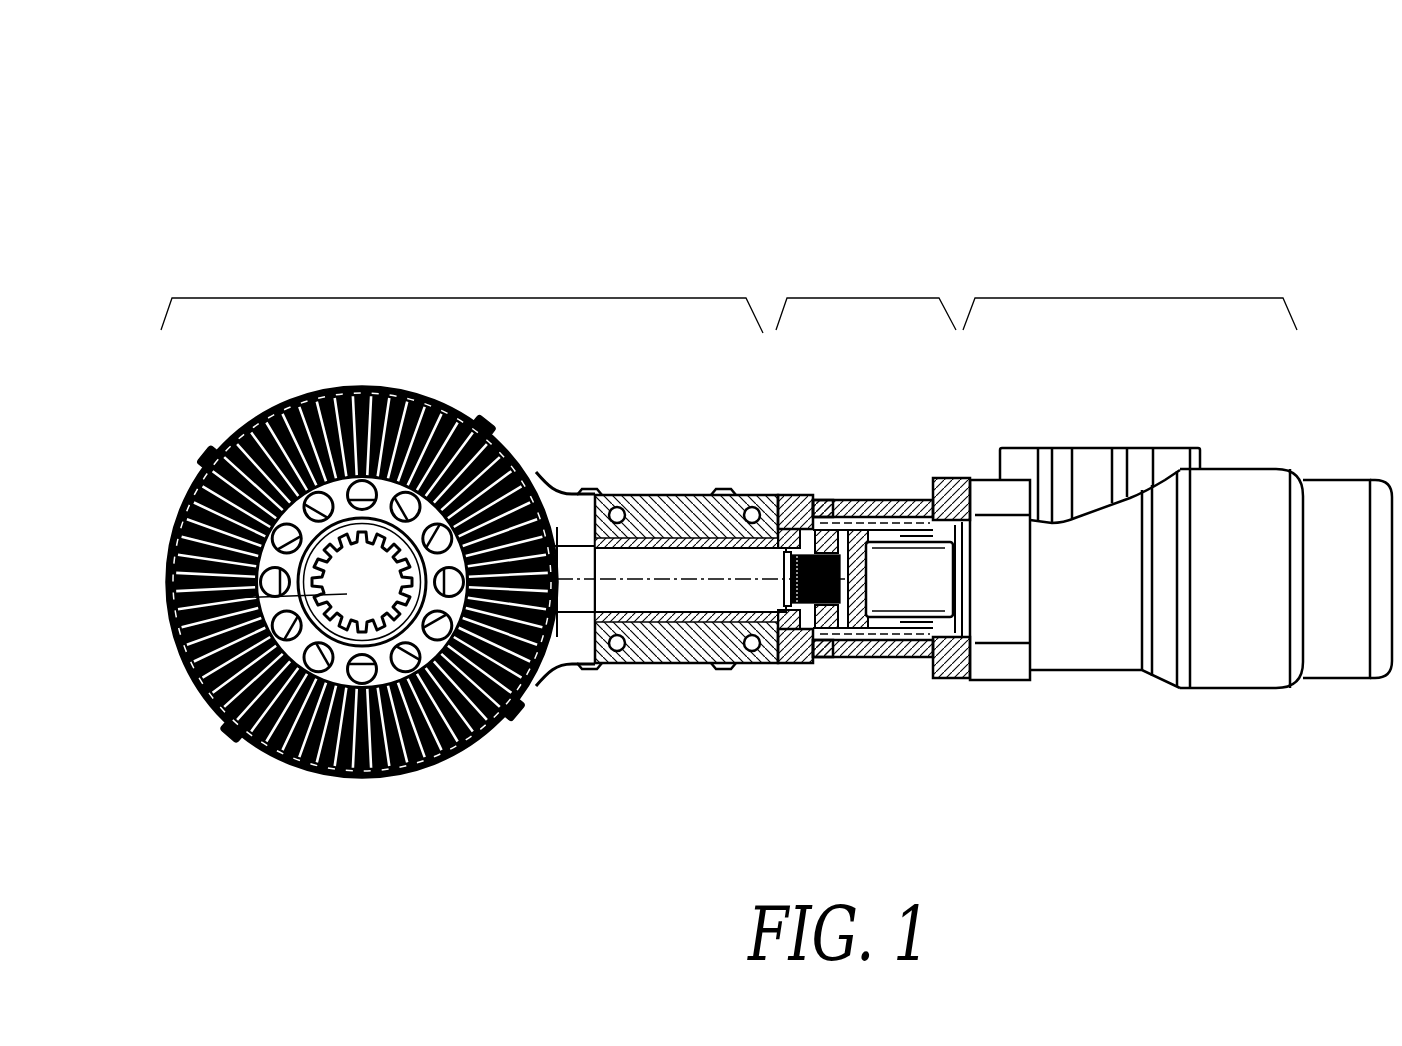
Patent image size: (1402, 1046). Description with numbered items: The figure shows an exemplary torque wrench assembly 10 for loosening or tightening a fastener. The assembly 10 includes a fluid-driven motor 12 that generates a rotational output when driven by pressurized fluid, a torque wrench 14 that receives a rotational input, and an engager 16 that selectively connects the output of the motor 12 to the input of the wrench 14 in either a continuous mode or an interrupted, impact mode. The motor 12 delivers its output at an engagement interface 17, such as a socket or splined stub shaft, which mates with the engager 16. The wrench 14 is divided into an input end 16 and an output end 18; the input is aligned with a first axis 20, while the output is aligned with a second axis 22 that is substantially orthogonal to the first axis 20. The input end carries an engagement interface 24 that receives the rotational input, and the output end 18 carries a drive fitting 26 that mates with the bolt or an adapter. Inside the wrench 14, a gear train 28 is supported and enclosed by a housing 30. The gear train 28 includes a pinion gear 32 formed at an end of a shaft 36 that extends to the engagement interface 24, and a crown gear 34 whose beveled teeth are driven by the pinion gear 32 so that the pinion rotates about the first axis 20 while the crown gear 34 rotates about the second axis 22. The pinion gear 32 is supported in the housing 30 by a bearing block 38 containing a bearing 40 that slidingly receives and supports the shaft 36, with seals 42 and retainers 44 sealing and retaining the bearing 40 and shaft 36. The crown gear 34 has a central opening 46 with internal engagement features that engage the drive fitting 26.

The torque wrench assembly 10 is at (992, 156).
The motor 12 is at (1200, 298).
The torque wrench 14 is at (455, 298).
The engager 16 is at (851, 298).
The engagement interface 17 is at (923, 591).
The output end 18 is at (319, 639).
The first axis 20 is at (658, 588).
The second axis 22 is at (362, 578).
The engagement interface 24 is at (822, 662).
The drive fitting 26 is at (187, 660).
The gear train 28 is at (583, 643).
The housing 30 is at (550, 480).
The pinion gear 32 is at (550, 530).
The crown gear 34 is at (462, 753).
The shaft 36 is at (708, 584).
The bearing block 38 is at (678, 495).
The bearing 40 is at (777, 495).
The seal 42 is at (640, 495).
The retainer 44 is at (805, 498).
The central opening 46 is at (172, 597).